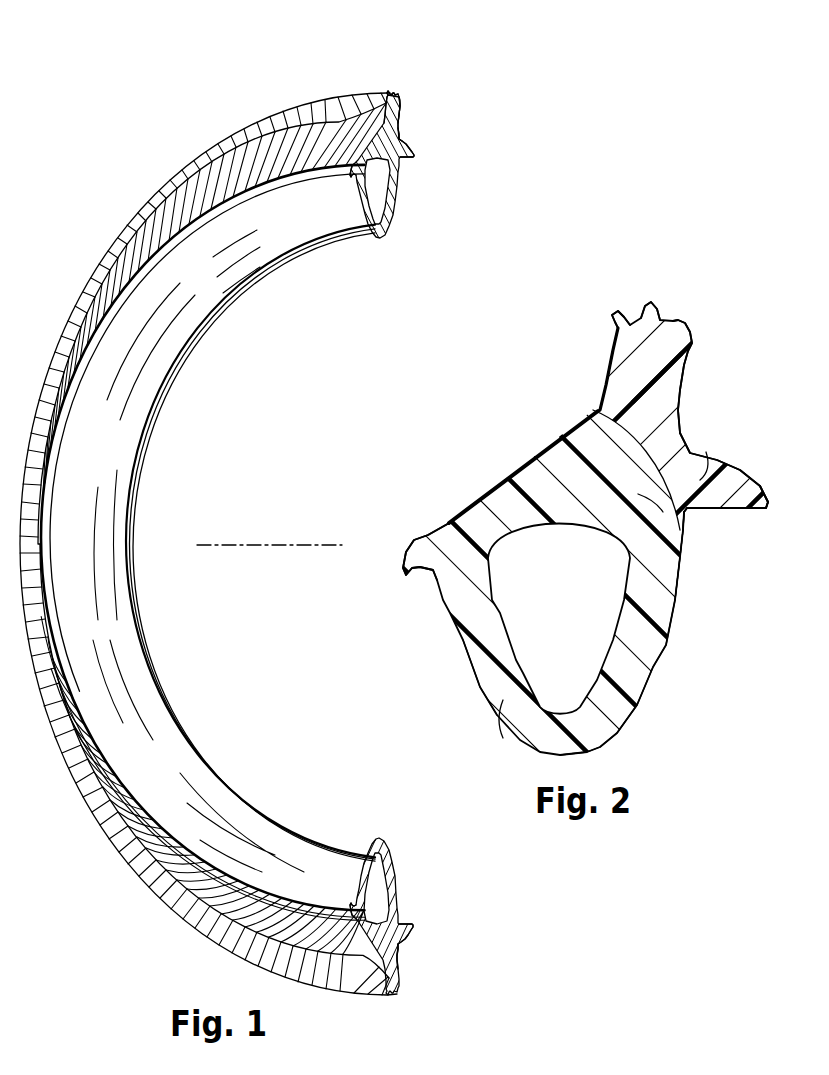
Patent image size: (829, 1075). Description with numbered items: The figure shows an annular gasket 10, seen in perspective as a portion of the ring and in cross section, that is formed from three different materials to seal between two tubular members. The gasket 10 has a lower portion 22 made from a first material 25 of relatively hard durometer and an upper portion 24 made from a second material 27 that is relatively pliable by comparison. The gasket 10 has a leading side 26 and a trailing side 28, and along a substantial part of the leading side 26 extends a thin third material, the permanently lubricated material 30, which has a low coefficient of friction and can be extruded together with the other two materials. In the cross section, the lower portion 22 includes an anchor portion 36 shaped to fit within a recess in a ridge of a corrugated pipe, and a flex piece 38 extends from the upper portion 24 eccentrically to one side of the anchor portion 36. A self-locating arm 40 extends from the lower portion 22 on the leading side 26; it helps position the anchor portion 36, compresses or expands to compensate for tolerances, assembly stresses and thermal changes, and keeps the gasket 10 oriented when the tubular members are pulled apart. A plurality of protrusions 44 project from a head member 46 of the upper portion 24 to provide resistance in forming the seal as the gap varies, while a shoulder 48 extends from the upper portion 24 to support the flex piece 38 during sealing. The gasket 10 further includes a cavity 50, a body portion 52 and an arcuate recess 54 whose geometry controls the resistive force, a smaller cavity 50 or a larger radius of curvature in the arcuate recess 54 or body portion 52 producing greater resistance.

In FIG. 1, the gasket 10 is at (438, 73).
In FIG. 2, the gasket 10 is at (681, 294).
In FIG. 1, the lower portion 22 is at (416, 202).
In FIG. 2, the lower portion 22 is at (702, 568).
In FIG. 1, the upper portion 24 is at (452, 128).
In FIG. 2, the upper portion 24 is at (697, 355).
In FIG. 2, the first material 25 is at (503, 712).
In FIG. 2, the leading side 26 is at (510, 436).
In FIG. 2, the second material 27 is at (700, 458).
In FIG. 2, the trailing side 28 is at (740, 437).
In FIG. 1, the permanently lubricated material 30 is at (380, 975).
In FIG. 2, the permanently lubricated material 30 is at (582, 418).
In FIG. 1, the anchor portion 36 is at (365, 239).
In FIG. 2, the anchor portion 36 is at (648, 634).
In FIG. 2, the flex piece 38 is at (674, 376).
In FIG. 1, the self-locating arm 40 is at (349, 180).
In FIG. 2, the self-locating arm 40 is at (407, 575).
In FIG. 1, the protrusions 44 is at (392, 97).
In FIG. 2, the protrusions 44 is at (616, 322).
In FIG. 1, the head member 46 is at (400, 118).
In FIG. 2, the head member 46 is at (606, 380).
In FIG. 1, the shoulder 48 is at (412, 158).
In FIG. 2, the shoulder 48 is at (744, 490).
In FIG. 1, the cavity 50 is at (394, 237).
In FIG. 2, the cavity 50 is at (618, 712).
In FIG. 1, the body portion 52 is at (398, 138).
In FIG. 2, the body portion 52 is at (686, 520).
In FIG. 1, the arcuate recess 54 is at (403, 956).
In FIG. 2, the arcuate recess 54 is at (686, 418).